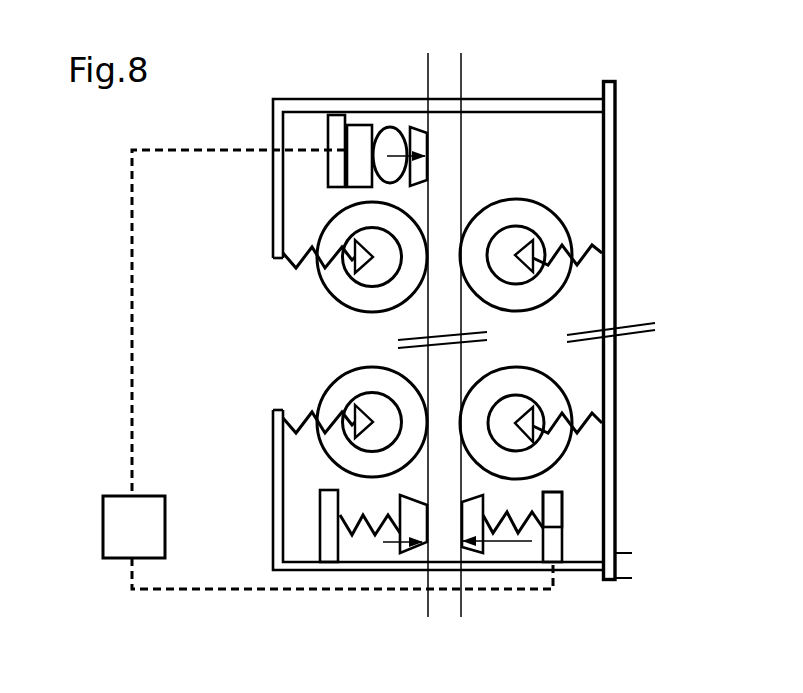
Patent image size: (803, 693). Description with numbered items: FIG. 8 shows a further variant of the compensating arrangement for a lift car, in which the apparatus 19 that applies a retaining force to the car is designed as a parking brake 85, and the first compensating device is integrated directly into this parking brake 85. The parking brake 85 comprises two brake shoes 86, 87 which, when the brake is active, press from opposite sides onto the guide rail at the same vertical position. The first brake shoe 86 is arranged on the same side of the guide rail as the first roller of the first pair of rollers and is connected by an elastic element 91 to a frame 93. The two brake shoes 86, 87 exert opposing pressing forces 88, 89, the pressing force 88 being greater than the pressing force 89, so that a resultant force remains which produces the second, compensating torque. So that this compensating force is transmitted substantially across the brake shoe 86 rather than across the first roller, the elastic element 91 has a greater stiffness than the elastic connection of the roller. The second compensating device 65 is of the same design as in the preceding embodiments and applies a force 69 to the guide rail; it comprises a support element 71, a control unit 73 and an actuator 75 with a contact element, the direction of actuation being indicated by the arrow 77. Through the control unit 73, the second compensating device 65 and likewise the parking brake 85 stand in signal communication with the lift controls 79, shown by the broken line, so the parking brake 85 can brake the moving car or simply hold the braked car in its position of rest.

The apparatus 19 is at (583, 505).
The second compensating device 65 is at (303, 185).
The force 69 is at (420, 142).
The support element 71 is at (335, 138).
The control unit 73 is at (362, 138).
The actuator 75 is at (392, 138).
The displacement direction 77 is at (418, 152).
The lift controls 79 is at (115, 532).
The parking brake 85 is at (597, 468).
The first brake shoe 86 is at (473, 523).
The second brake shoe 87 is at (412, 523).
The pressing force 88 is at (525, 525).
The pressing force 89 is at (403, 533).
The elastic element 91 is at (557, 557).
The frame 93 is at (548, 522).